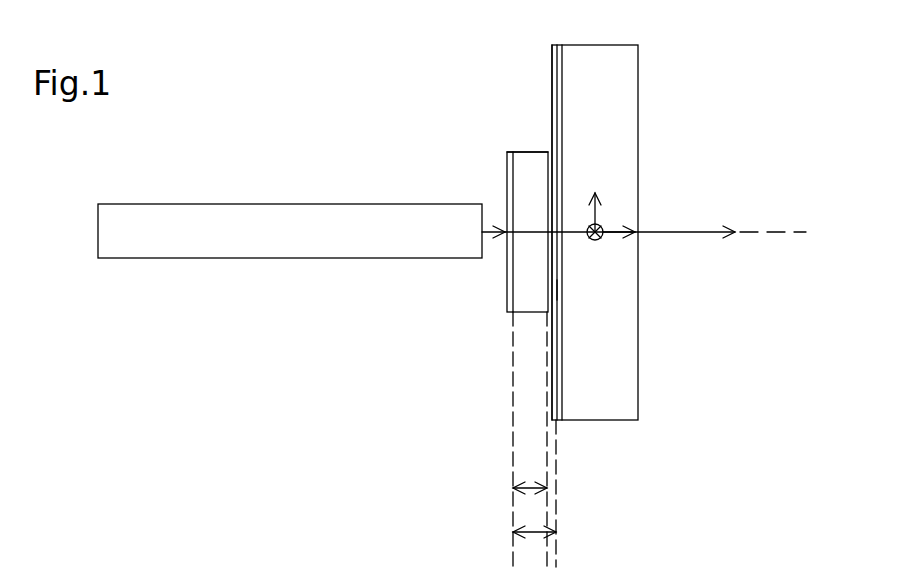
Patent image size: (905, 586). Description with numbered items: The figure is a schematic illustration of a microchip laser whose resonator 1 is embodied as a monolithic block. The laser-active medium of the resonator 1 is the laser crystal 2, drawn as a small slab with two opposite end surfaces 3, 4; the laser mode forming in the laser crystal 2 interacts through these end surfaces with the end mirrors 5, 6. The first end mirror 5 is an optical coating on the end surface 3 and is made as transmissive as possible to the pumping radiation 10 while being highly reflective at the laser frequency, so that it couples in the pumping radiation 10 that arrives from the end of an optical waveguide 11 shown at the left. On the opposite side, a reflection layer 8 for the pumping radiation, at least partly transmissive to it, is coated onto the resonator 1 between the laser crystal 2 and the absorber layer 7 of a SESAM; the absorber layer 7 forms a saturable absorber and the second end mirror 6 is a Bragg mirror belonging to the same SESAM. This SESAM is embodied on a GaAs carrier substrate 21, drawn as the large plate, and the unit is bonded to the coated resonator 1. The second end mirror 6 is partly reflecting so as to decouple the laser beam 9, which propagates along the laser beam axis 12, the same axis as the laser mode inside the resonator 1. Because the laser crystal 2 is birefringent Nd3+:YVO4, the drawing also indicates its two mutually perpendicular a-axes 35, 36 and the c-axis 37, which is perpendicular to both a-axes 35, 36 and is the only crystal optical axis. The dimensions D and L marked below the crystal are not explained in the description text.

The resonator 1 is at (487, 75).
The laser crystal 2 is at (528, 303).
The end surface 3 is at (512, 283).
The end surface 4 is at (547, 287).
The first end mirror 5 is at (508, 158).
The second end mirror 6 is at (558, 177).
The absorber layer 7 is at (557, 197).
The reflection layer 8 is at (552, 157).
The laser beam 9 is at (695, 232).
The pumping radiation 10 is at (497, 228).
The optical waveguide 11 is at (298, 222).
The laser beam axis 12 is at (777, 232).
The carrier substrate 21 is at (608, 397).
The a-axis 35 is at (597, 218).
The a-axis 36 is at (601, 240).
The c-axis 37 is at (599, 242).
The window thickness D is at (530, 439).
The distance L is at (534, 493).